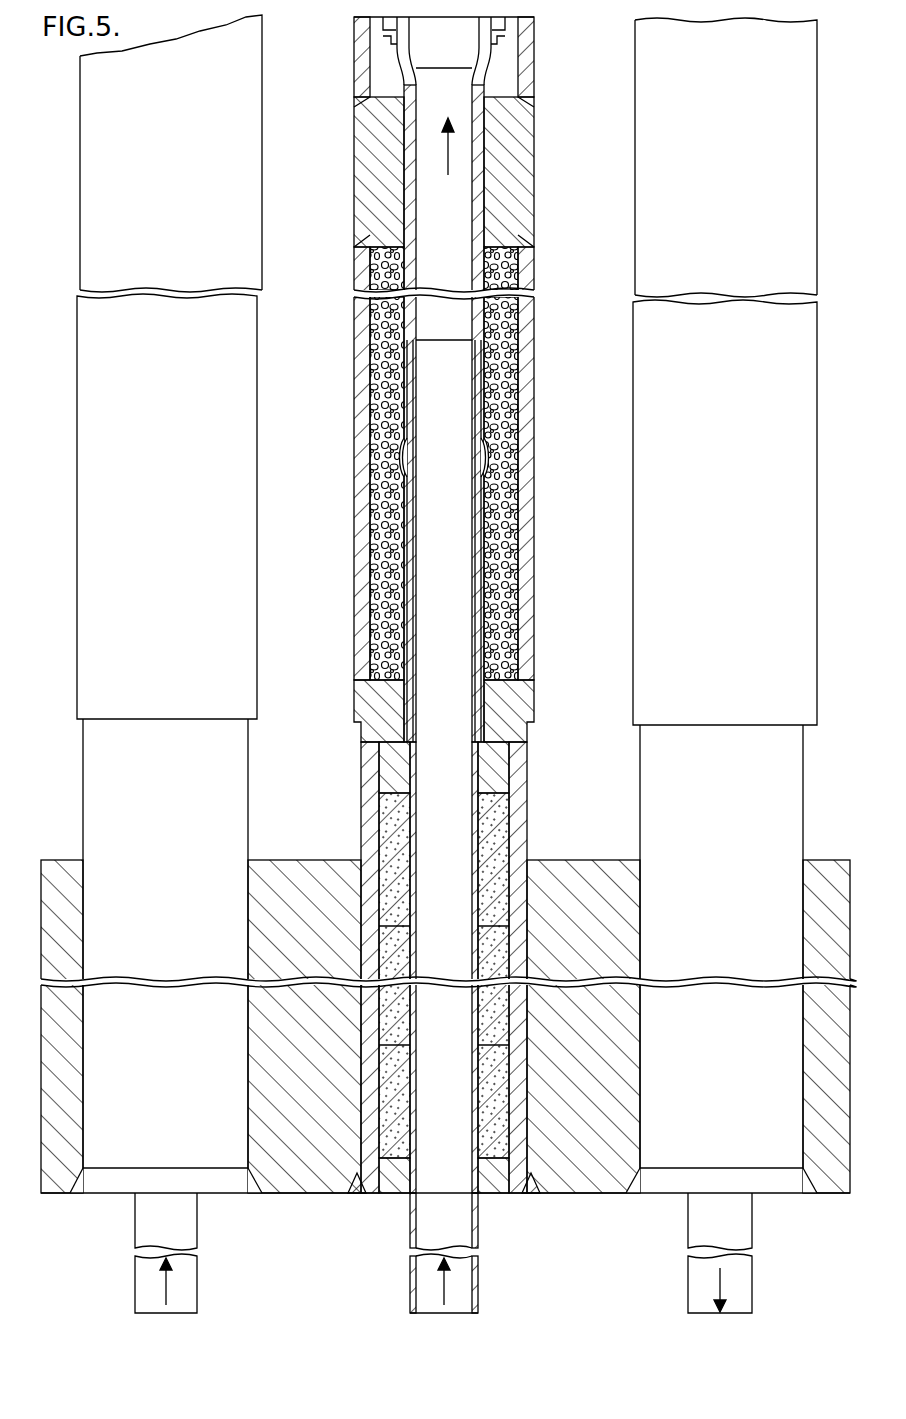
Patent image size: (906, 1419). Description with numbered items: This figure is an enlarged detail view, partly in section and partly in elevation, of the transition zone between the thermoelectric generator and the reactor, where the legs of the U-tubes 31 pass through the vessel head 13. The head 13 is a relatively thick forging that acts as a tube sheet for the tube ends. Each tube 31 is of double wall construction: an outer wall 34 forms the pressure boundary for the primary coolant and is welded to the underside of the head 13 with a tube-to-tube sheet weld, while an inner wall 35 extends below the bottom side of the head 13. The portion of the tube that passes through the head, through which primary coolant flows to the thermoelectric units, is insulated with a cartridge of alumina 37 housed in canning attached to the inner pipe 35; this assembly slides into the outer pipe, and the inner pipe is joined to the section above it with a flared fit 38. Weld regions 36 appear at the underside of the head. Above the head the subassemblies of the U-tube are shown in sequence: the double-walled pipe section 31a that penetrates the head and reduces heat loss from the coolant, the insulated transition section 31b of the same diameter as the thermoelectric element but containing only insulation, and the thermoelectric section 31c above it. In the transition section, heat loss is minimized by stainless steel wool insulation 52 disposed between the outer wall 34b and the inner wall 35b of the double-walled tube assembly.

The vessel head 13 is at (314, 870).
The U-tube 31 is at (316, 505).
The double-walled pipe section 31a is at (180, 841).
The insulated transition section 31b is at (178, 405).
The thermoelectric section 31c is at (597, 79).
The outer wall 34 is at (526, 793).
The outer wall 34b is at (532, 558).
The inner wall 35 is at (473, 556).
The inner wall 35b is at (505, 498).
The weld 36 is at (357, 1193).
The alumina insulation 37 is at (487, 900).
The flared fit 38 is at (480, 452).
The stainless steel wool insulation 52 is at (507, 595).